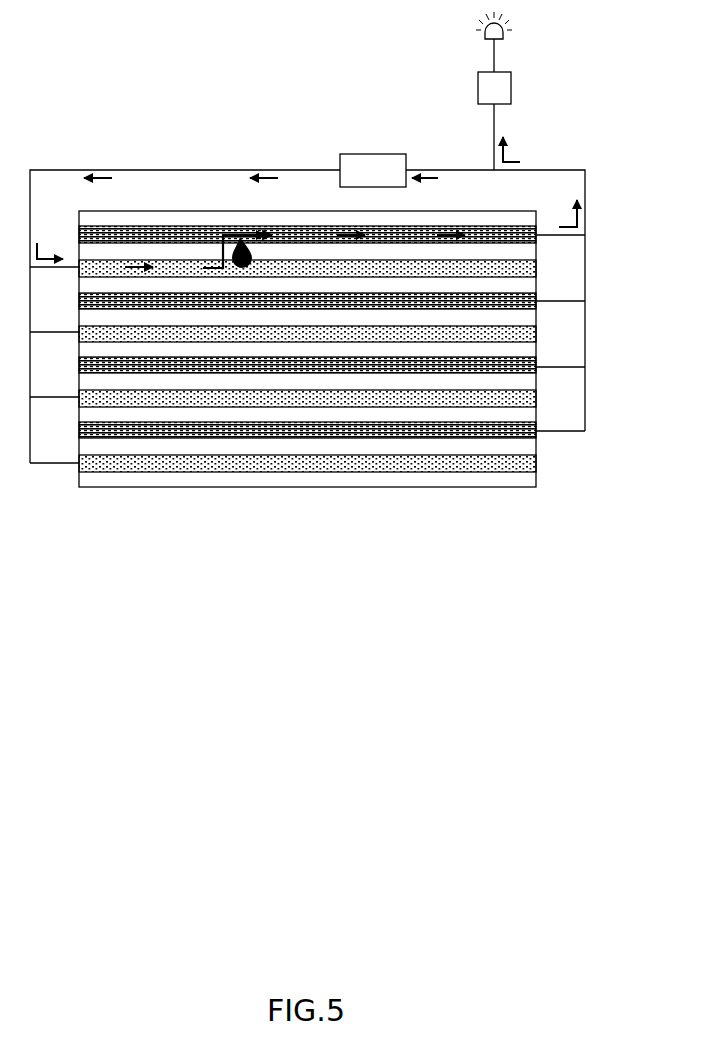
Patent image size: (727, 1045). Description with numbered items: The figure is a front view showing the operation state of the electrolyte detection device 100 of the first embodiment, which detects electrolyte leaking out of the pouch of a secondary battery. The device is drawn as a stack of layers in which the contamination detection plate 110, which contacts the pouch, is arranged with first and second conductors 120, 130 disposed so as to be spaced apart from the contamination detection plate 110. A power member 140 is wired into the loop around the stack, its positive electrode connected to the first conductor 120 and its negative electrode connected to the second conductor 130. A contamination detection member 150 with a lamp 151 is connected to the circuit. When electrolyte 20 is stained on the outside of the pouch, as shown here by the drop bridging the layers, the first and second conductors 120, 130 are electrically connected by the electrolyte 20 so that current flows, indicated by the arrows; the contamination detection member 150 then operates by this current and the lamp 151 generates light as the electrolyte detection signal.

The electrolyte 20 is at (239, 236).
The electrolyte detection device 100 is at (387, 349).
The contamination detection plate 110 is at (536, 281).
The first conductor 120 is at (536, 302).
The second conductor 130 is at (536, 330).
The power member 140 is at (370, 154).
The contamination detection member 150 is at (511, 88).
The lamp 151 is at (503, 32).